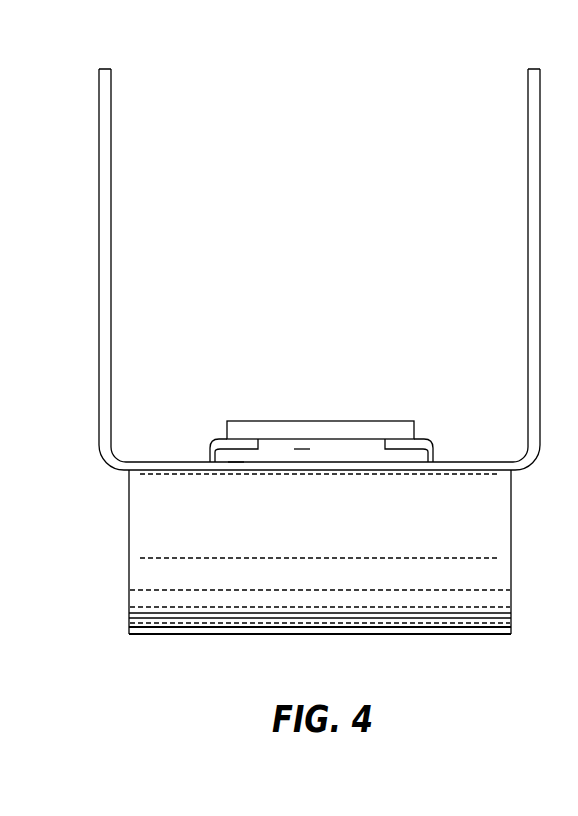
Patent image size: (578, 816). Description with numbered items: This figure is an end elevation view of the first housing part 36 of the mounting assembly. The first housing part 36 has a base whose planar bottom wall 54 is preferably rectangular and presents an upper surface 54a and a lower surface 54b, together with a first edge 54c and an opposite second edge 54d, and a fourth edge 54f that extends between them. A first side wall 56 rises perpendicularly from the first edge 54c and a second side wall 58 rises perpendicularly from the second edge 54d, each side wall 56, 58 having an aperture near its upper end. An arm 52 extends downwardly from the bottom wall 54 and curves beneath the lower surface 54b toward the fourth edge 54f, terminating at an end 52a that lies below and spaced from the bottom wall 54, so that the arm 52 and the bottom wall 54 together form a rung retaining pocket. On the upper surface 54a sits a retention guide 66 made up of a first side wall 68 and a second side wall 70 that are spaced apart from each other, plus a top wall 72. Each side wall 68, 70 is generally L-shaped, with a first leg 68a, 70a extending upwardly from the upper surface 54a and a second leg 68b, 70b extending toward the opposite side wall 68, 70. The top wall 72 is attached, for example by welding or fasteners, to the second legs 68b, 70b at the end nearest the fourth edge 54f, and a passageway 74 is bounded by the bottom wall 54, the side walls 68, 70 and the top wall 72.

The first housing part 36 is at (458, 56).
The arm 52 is at (393, 575).
The end 52a is at (280, 637).
The bottom wall 54 is at (460, 466).
The upper surface 54a is at (496, 458).
The lower surface 54b is at (349, 472).
The first edge 54c is at (128, 462).
The second edge 54d is at (520, 458).
The fourth edge 54f is at (165, 463).
The first side wall 56 is at (105, 141).
The second side wall 58 is at (535, 153).
The retention guide 66 is at (236, 467).
The first side wall of retention guide 68 is at (187, 446).
The first leg 68a is at (210, 452).
The second leg 68b is at (228, 420).
The second side wall of retention guide 70 is at (453, 445).
The first leg 70a is at (432, 442).
The second leg 70b is at (412, 421).
The top wall 72 is at (378, 421).
The passageway 74 is at (302, 450).